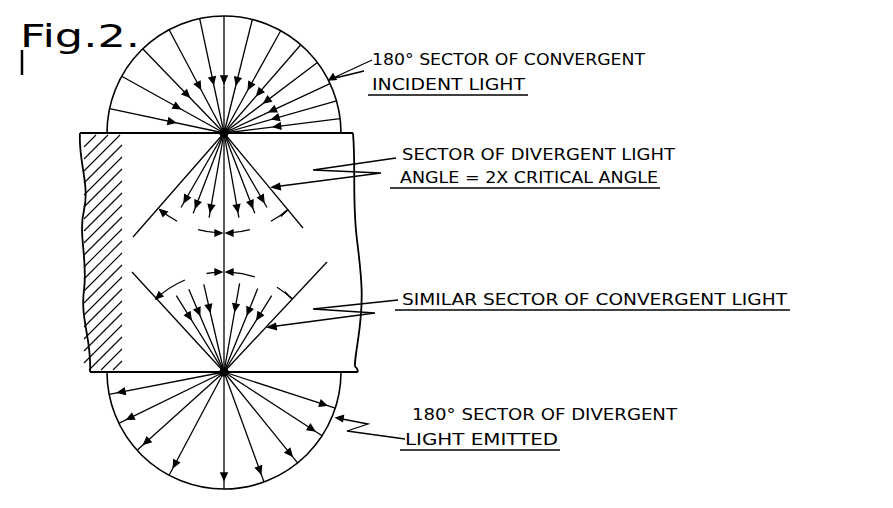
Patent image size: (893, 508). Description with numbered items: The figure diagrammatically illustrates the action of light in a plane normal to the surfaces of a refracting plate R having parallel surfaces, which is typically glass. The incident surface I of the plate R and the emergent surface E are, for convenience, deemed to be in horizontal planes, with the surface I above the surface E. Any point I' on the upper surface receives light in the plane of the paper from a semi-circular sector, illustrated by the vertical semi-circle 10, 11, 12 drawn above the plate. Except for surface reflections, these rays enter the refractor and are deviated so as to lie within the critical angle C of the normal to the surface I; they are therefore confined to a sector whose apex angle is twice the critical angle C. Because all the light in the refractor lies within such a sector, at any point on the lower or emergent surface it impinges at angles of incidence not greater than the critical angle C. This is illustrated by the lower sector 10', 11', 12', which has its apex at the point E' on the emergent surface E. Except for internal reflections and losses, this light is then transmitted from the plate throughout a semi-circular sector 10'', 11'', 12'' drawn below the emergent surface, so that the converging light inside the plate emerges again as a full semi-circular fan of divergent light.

The vertical semi-circle sector end 10 is at (299, 120).
The lower sector boundary 10' is at (164, 322).
The emergent semi-circular sector end 10'' is at (309, 390).
The vertical semi-circle sector middle 11 is at (224, 68).
The lower sector middle 11' is at (246, 252).
The emergent semi-circular sector middle 11'' is at (224, 440).
The vertical semi-circle sector end 12 is at (153, 109).
The lower sector boundary 12' is at (288, 311).
The emergent semi-circular sector end 12'' is at (146, 393).
The incident surface I is at (204, 116).
The point on incident surface I' is at (218, 185).
The emergent surface E is at (202, 387).
The apex of lower sector E' is at (214, 329).
The refracting plate R is at (86, 307).
The critical angle C is at (224, 254).